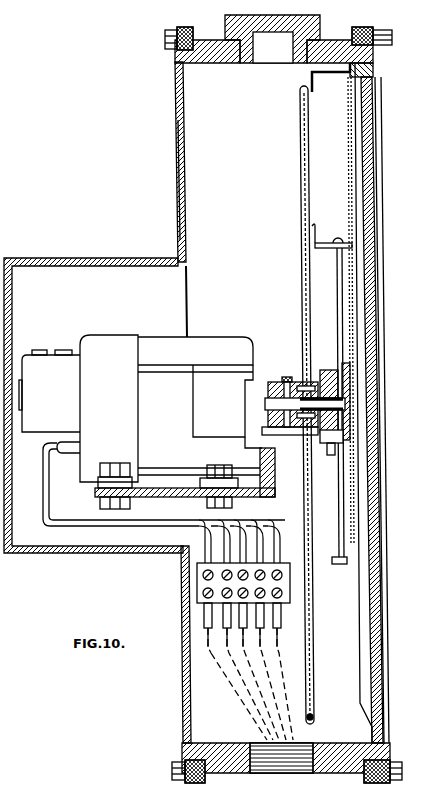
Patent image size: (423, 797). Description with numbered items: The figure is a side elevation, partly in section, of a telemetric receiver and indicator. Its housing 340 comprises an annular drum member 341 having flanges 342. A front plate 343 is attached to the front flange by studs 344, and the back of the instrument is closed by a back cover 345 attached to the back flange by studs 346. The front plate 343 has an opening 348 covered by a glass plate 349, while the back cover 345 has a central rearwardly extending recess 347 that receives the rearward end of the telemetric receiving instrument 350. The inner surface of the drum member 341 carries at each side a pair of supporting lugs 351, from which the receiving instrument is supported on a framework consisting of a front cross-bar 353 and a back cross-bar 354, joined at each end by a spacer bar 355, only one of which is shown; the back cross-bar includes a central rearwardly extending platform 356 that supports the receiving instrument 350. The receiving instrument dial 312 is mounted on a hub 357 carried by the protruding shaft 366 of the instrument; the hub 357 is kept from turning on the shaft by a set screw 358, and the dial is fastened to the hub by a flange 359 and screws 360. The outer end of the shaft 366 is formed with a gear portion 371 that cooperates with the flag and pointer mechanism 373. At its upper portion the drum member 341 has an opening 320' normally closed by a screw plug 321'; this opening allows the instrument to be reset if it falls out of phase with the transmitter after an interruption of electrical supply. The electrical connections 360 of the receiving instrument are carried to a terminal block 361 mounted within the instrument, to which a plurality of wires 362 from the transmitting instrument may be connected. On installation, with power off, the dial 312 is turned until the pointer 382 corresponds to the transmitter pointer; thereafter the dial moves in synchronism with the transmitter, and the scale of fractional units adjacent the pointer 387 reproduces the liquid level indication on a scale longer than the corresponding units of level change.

The receiving instrument dial 312 is at (302, 152).
The opening 320' is at (271, 54).
The screw plug 321' is at (273, 58).
The housing 340 is at (220, 118).
The annular drum member 341 is at (328, 38).
The flanges 342 is at (196, 20).
The front plate 343 is at (379, 88).
The studs 344 is at (374, 70).
The back cover 345 is at (179, 179).
The studs 346 is at (165, 40).
The recess 347 is at (53, 555).
The opening 348 is at (382, 403).
The glass plate 349 is at (385, 410).
The telemetric receiving instrument 350 is at (103, 352).
The supporting lugs 351 is at (365, 433).
The front cross-bar 353 is at (376, 387).
The back cross-bar 354 is at (300, 455).
The spacer bar 355 is at (268, 376).
The platform 356 is at (97, 491).
The hub 357 is at (283, 380).
The set screw 358 is at (287, 377).
The flange 359 is at (318, 455).
The screws / electrical connections 360 is at (313, 380).
The terminal block 361 is at (200, 580).
The wires 362 is at (241, 697).
The protruding shaft 366 is at (283, 436).
The gear portion 371 is at (337, 393).
The flag and pointer mechanism 373 is at (377, 311).
The pointer 382 is at (317, 224).
The pointer 387 is at (313, 93).